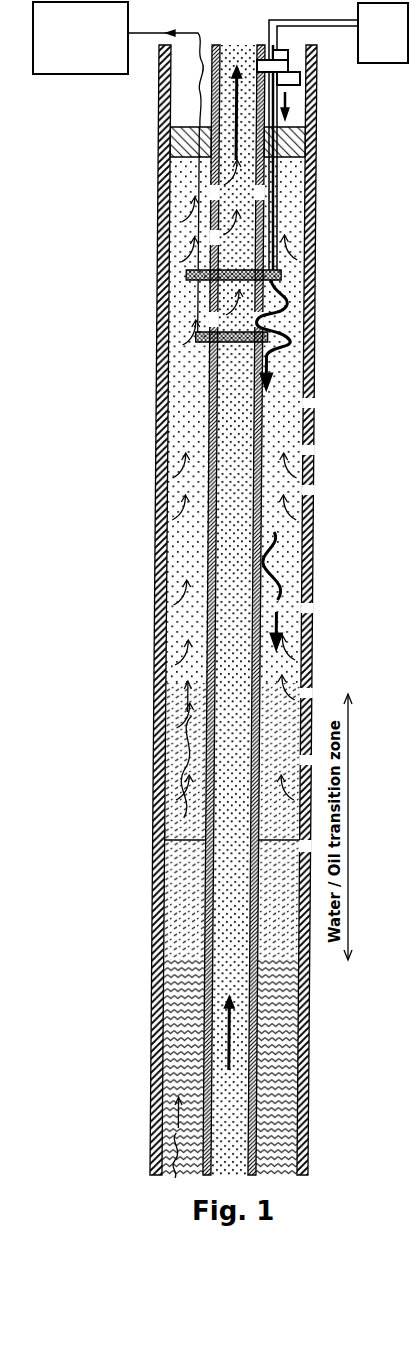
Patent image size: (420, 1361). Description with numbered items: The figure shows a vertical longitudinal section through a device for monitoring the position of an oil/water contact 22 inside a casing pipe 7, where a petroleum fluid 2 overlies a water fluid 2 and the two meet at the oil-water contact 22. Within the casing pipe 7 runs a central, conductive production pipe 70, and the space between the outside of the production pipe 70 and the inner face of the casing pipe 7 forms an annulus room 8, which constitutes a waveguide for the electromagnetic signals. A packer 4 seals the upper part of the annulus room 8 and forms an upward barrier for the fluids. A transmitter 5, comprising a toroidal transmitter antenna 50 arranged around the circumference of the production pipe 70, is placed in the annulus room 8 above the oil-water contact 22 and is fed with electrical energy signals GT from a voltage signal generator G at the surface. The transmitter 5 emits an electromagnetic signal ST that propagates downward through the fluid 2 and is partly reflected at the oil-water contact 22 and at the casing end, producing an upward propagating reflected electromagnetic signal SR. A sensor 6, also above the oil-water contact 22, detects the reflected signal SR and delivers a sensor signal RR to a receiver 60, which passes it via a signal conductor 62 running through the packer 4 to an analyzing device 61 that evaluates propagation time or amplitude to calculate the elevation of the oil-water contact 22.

The fluid 2 is at (190, 402).
The packer 4 is at (158, 138).
The transmitter 5 is at (172, 243).
The sensor 6 is at (198, 333).
The casing pipe 7 is at (158, 197).
The annulus room 8 is at (158, 224).
The oil-water contact 22 is at (419, 803).
The toroidal transmitter antenna 50 is at (188, 270).
The receiver 60 is at (80, 38).
The analyzing device 61 is at (80, 38).
The signal conductor 62 is at (200, 195).
The central production pipe 70 is at (205, 523).
The sensor signal RR is at (165, 63).
The voltage signal generator G is at (383, 33).
The electrical energy signals GT is at (318, 107).
The electromagnetic signal ST is at (313, 577).
The reflected electromagnetic signal SR is at (153, 737).